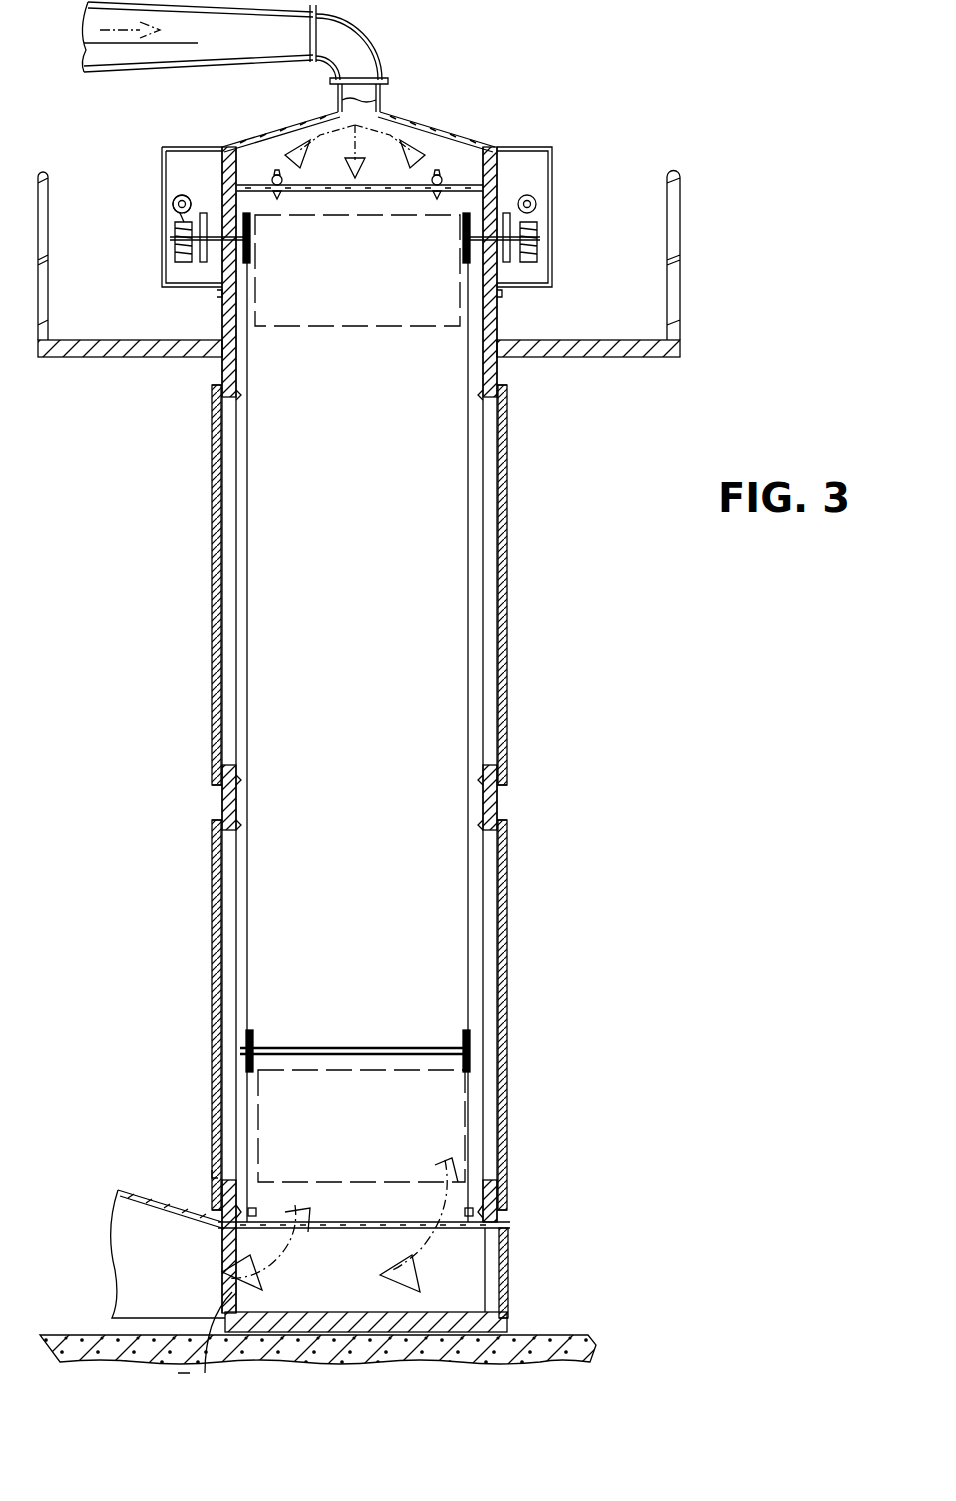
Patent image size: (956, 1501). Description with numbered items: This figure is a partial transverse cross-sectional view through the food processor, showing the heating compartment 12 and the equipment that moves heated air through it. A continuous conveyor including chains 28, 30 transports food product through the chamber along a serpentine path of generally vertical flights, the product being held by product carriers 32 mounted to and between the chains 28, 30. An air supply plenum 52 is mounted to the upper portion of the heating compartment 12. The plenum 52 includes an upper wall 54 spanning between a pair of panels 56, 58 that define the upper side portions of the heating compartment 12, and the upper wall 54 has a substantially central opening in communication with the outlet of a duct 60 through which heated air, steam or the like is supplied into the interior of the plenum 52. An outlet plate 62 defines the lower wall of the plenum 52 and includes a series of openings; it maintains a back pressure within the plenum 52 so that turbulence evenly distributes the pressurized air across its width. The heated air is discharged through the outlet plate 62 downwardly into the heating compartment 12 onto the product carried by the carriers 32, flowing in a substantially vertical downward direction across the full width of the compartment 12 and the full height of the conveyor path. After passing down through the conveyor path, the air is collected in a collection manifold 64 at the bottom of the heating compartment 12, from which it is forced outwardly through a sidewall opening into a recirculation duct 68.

The heating compartment 12 is at (475, 636).
The chain 28 is at (468, 728).
The chain 30 is at (250, 686).
The product carrier 32 is at (318, 328).
The air supply plenum 52 is at (440, 103).
The upper wall 54 is at (440, 125).
The panel 56 is at (222, 175).
The panel 58 is at (500, 158).
The duct 60 is at (146, 72).
The outlet plate 62 is at (305, 195).
The collection manifold 64 is at (354, 1294).
The recirculation duct 68 is at (167, 1200).